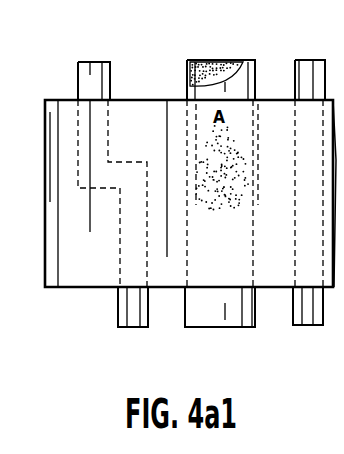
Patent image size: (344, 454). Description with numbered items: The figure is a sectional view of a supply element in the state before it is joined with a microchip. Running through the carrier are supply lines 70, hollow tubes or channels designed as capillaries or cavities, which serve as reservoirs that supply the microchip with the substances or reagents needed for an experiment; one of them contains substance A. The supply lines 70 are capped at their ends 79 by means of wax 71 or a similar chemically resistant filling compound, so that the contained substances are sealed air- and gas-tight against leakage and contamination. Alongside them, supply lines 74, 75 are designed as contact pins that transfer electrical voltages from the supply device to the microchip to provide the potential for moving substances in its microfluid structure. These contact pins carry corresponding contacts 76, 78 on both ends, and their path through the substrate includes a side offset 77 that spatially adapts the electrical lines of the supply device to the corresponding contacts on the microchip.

The supply lines 70 is at (185, 156).
The wax 71 is at (221, 60).
The supply line 74 is at (312, 246).
The supply line 75 is at (125, 257).
The contact 76 is at (137, 327).
The side offset 77 is at (96, 203).
The contact 78 is at (92, 62).
The ends 79 is at (186, 65).